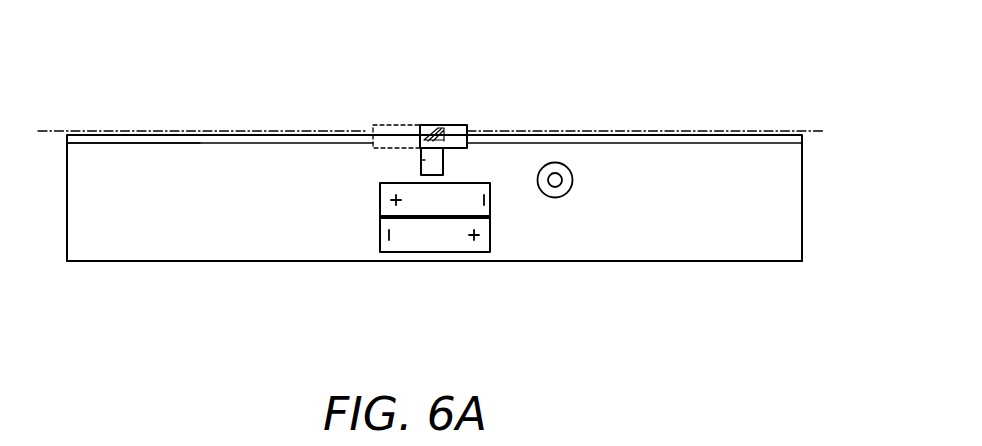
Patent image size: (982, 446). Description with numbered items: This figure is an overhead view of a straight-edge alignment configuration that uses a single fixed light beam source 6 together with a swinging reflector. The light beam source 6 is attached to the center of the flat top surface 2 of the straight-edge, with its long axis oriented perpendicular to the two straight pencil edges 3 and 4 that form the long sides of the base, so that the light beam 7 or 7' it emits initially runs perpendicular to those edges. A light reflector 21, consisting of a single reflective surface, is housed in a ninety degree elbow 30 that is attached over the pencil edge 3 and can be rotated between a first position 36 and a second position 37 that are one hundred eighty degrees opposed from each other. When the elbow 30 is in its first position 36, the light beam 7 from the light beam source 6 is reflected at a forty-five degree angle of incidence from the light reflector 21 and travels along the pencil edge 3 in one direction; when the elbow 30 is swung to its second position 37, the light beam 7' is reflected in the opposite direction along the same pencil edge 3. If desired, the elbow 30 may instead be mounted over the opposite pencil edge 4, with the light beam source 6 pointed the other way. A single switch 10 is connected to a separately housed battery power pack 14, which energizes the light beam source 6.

The flat top surface 2 is at (120, 220).
The pencil edge 3 is at (162, 130).
The pencil edge 4 is at (178, 261).
The light beam source 6 is at (420, 160).
The light beam 7 is at (434, 98).
The light beam 7' is at (157, 86).
The switch 10 is at (562, 180).
The battery power pack 14 is at (407, 210).
The light reflector 21 is at (442, 132).
The 90 degree elbow 30 is at (467, 147).
The first position 36 is at (470, 131).
The second position 37 is at (393, 125).